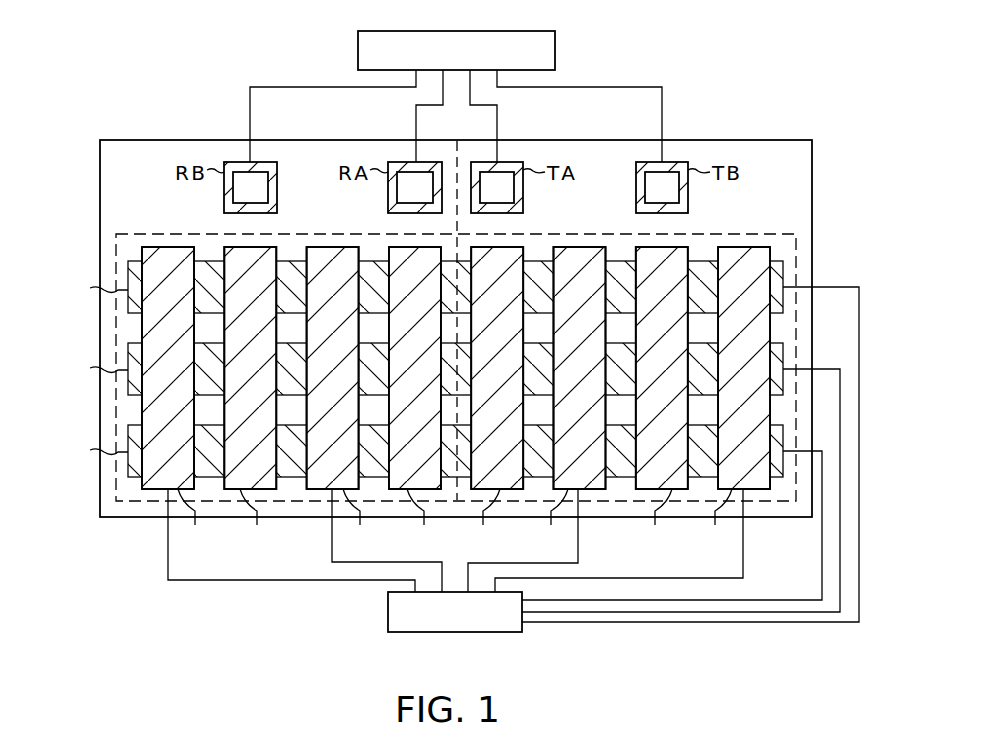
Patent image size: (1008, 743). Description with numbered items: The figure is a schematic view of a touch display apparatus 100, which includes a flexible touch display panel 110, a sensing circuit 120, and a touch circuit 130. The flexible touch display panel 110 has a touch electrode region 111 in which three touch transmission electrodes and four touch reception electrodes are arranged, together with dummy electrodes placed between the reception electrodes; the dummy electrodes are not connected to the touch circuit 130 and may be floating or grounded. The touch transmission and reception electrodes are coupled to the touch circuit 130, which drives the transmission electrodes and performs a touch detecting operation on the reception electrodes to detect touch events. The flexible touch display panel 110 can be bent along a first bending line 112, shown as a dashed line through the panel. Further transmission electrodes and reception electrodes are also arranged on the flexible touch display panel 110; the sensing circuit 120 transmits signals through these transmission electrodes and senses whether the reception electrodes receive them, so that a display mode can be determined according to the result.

The touch display apparatus 100 is at (175, 600).
The flexible touch display panel 110 is at (150, 138).
The touch electrode region 111 is at (789, 232).
The first bending line 112 is at (457, 157).
The sensing circuit 120 is at (358, 51).
The touch circuit 130 is at (388, 612).